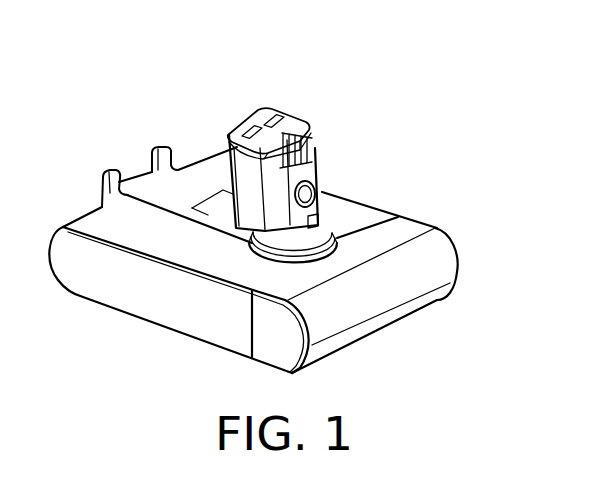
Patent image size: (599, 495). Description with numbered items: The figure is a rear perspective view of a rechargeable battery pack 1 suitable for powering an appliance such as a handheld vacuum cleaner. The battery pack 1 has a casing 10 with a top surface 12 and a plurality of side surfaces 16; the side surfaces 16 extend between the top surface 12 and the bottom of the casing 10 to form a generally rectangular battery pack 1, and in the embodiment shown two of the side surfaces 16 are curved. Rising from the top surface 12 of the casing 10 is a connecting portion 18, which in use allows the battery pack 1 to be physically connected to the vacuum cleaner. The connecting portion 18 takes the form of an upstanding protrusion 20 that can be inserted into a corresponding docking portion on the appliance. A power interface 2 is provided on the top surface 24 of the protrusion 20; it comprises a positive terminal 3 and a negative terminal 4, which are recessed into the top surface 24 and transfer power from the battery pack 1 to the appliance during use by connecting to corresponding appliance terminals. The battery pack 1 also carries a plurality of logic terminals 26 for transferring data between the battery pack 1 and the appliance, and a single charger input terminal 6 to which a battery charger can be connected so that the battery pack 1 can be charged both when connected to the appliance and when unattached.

The rechargeable battery pack 1 is at (285, 212).
The power interface 2 is at (280, 146).
The positive terminal 3 is at (268, 105).
The negative terminal 4 is at (277, 118).
The top surface of the protrusion 24 is at (296, 125).
The logic terminals 26 is at (314, 138).
The charger input terminal 6 is at (310, 190).
The casing 10 is at (285, 293).
The top surface 12 is at (163, 245).
The side surfaces 16 is at (218, 330).
The connecting portion 18 is at (250, 151).
The protrusion 20 is at (258, 175).